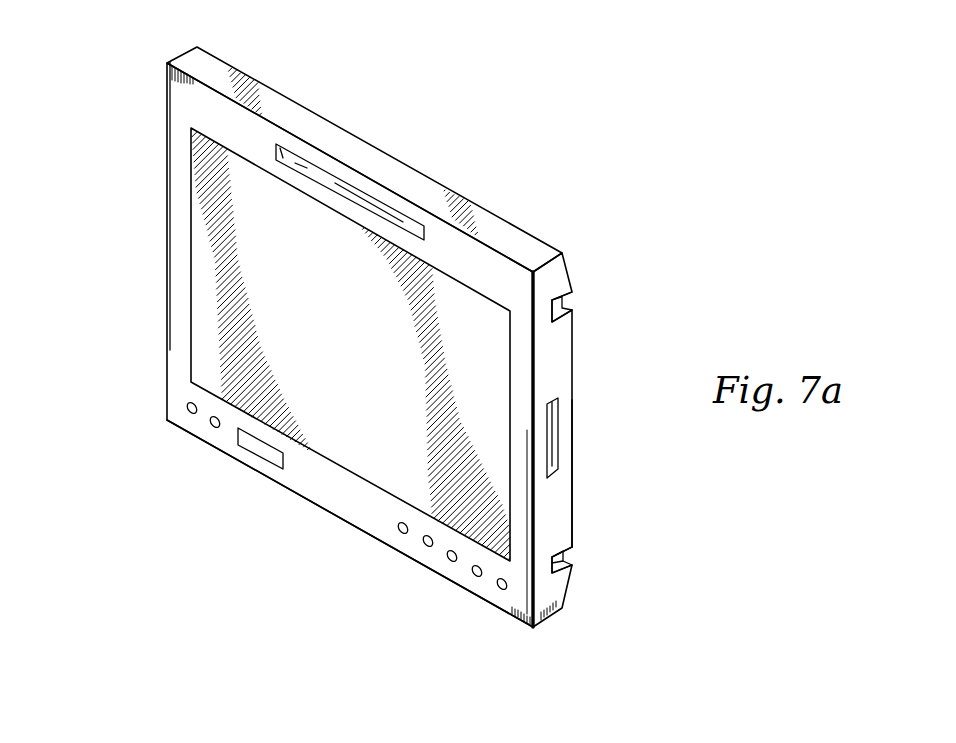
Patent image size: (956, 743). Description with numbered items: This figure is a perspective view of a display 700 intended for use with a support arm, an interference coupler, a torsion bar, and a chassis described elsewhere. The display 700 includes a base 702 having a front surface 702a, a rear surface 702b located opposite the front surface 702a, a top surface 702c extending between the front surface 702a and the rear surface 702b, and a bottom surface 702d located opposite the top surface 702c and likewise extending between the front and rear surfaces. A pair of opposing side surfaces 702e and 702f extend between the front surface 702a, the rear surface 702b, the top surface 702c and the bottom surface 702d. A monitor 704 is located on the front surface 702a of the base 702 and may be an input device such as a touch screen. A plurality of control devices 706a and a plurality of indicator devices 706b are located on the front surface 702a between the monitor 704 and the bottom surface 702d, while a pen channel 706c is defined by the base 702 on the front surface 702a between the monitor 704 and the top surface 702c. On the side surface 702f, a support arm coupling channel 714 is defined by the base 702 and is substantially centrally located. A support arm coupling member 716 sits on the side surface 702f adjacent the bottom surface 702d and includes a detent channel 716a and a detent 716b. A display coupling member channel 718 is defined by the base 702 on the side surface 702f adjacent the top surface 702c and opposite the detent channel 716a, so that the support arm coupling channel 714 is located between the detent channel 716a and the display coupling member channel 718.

The display 700 is at (515, 157).
The base 702 is at (159, 193).
The front surface 702a is at (178, 368).
The rear surface 702b is at (573, 358).
The top surface 702c is at (392, 168).
The bottom surface 702d is at (305, 499).
The side surface 702e is at (167, 262).
The side surface 702f is at (557, 485).
The monitor 704 is at (367, 368).
The control devices 706a is at (192, 413).
The indicator devices 706b is at (260, 448).
The pen channel 706c is at (334, 181).
The support arm coupling channel 714 is at (560, 442).
The support arm coupling member 716 is at (563, 592).
The detent channel 716a is at (566, 584).
The detent 716b is at (565, 553).
The display coupling member channel 718 is at (575, 297).